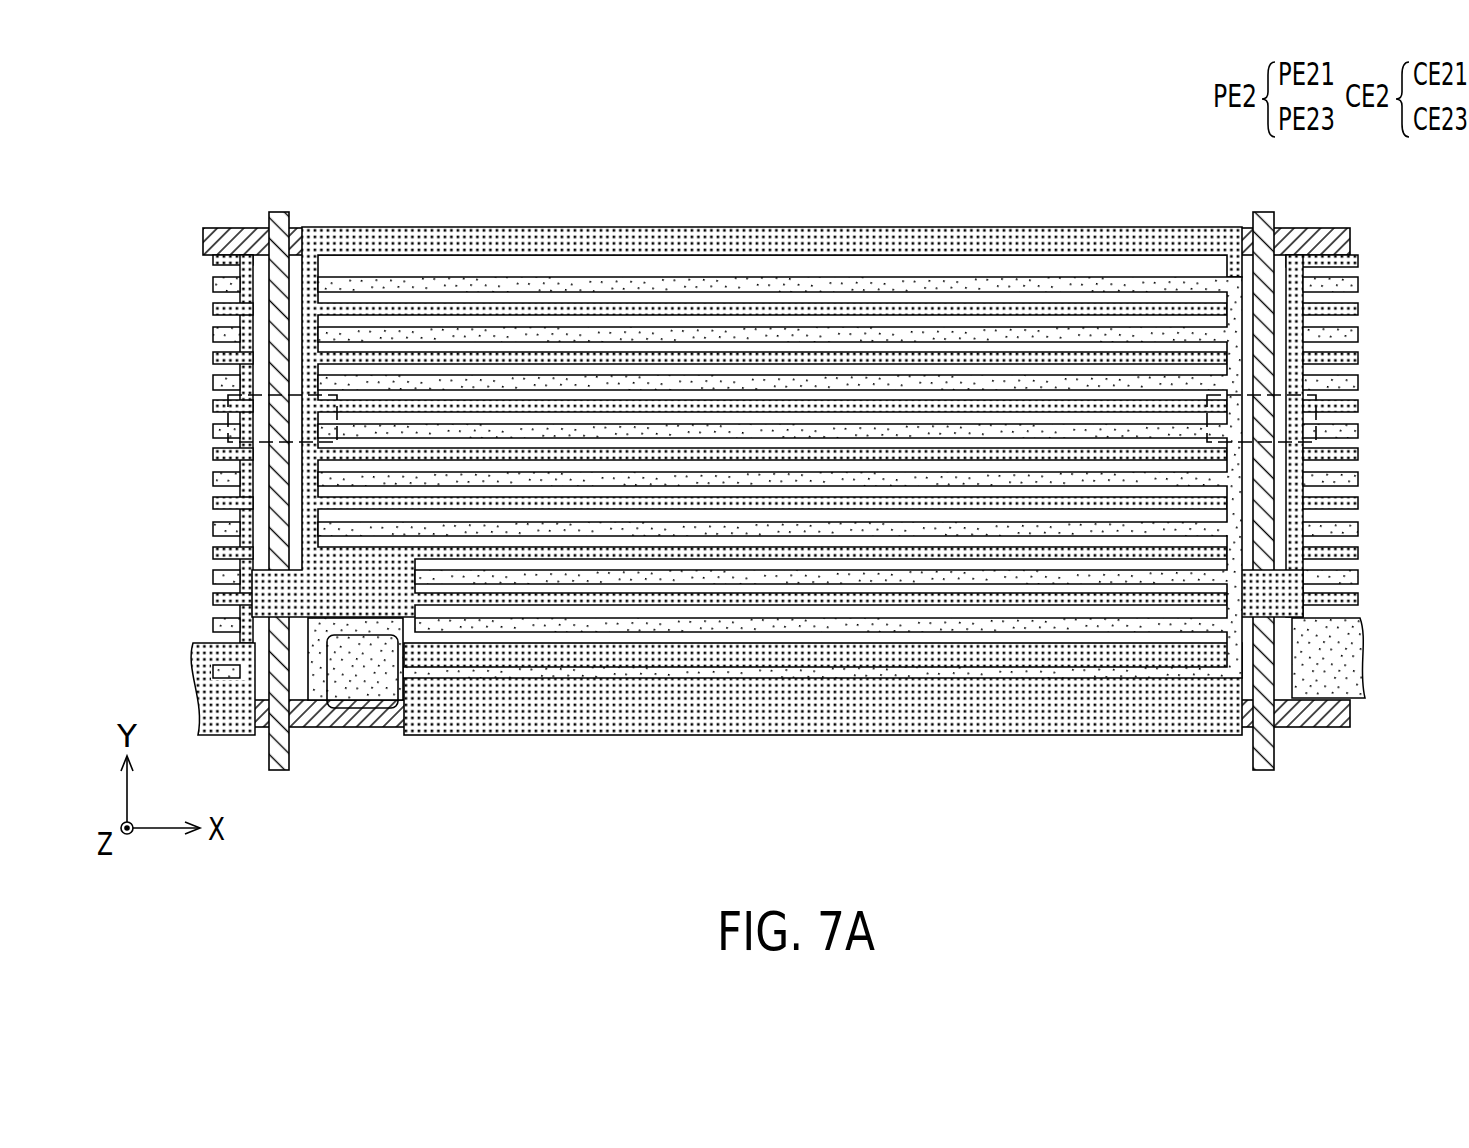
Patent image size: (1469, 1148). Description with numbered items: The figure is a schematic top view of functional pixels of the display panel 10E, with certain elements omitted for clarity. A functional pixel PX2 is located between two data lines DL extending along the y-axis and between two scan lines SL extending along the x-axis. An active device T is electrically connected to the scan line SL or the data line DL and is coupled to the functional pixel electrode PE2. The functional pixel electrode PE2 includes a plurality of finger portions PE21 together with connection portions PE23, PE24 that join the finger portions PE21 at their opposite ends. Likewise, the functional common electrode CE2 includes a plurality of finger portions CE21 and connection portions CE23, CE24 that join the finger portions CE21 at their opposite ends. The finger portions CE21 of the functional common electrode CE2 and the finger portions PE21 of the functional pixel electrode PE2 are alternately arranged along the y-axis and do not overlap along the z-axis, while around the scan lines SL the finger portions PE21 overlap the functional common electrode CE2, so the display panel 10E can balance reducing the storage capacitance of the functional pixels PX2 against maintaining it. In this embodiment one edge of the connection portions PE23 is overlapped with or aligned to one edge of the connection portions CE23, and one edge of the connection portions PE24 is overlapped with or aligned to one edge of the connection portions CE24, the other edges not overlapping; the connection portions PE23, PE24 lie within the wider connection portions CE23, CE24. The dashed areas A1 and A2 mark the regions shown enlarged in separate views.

The functional pixel PX2 is at (776, 474).
The display panel 10E is at (776, 474).
The scan line SL is at (1350, 240).
The data line DL is at (277, 770).
The active device T is at (337, 730).
The functional pixel electrode PE2 is at (779, 482).
The finger portions PE21 is at (1133, 623).
The connection portions PE23 is at (1230, 665).
The connection portions PE24 is at (314, 620).
The functional common electrode CE2 is at (747, 487).
The finger portions CE21 is at (1013, 598).
The connection portions CE23 is at (1235, 262).
The connection portions CE24 is at (312, 265).
The area A1 is at (1317, 413).
The area A2 is at (228, 412).